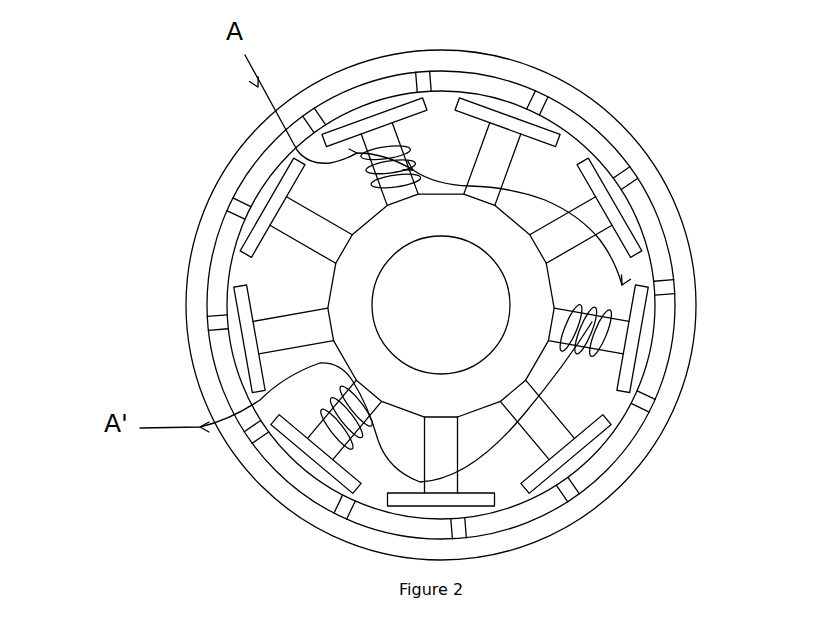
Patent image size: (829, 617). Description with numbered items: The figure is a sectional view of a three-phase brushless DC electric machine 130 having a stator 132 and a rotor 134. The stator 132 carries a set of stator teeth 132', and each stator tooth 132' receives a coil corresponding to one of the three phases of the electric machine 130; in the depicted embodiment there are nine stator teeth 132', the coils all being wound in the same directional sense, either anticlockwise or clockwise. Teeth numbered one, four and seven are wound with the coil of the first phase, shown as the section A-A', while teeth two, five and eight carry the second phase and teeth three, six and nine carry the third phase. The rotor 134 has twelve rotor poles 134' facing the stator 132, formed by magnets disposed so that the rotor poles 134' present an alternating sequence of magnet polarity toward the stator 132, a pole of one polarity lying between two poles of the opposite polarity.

The three-phase brushless DC electric machine 130 is at (53, 41).
The stator 132 is at (537, 304).
The stator teeth 132' is at (498, 302).
The rotor 134 is at (490, 305).
The rotor poles 134' is at (492, 305).